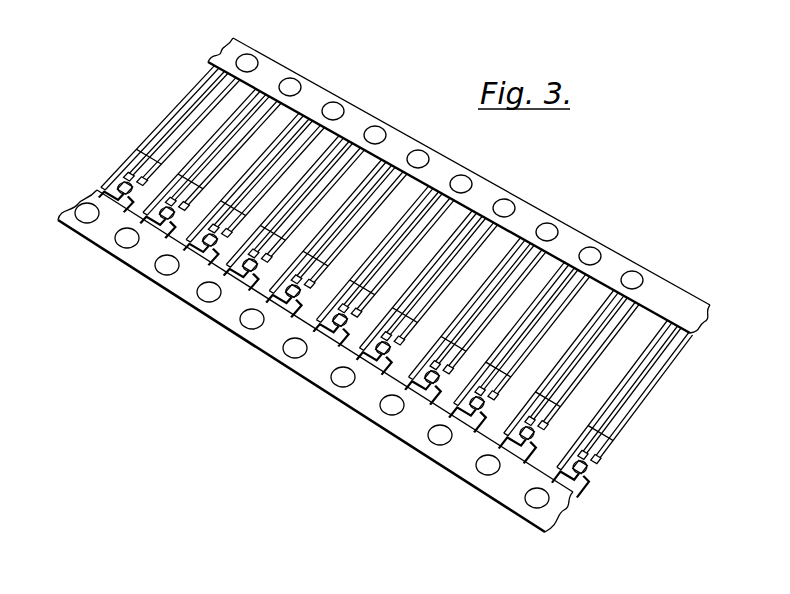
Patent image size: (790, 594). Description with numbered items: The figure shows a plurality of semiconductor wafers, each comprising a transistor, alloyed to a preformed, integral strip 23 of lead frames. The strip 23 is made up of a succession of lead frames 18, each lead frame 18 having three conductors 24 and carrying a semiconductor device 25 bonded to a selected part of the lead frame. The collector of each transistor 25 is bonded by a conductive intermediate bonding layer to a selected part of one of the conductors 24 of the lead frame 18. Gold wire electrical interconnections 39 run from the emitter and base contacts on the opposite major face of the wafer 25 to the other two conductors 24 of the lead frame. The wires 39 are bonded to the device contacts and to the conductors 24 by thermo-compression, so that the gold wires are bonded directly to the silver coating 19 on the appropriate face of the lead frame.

The lead frame 18 is at (628, 430).
The silver coating 19 is at (530, 499).
The lead frame strip 23 is at (625, 260).
The conductor 24 is at (653, 352).
The semiconductor device 25 is at (569, 469).
The gold wire electrical interconnections 39 is at (580, 450).